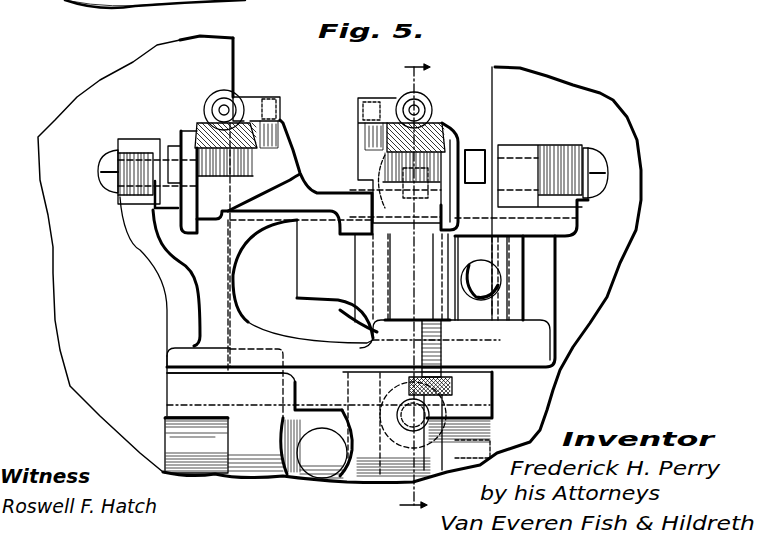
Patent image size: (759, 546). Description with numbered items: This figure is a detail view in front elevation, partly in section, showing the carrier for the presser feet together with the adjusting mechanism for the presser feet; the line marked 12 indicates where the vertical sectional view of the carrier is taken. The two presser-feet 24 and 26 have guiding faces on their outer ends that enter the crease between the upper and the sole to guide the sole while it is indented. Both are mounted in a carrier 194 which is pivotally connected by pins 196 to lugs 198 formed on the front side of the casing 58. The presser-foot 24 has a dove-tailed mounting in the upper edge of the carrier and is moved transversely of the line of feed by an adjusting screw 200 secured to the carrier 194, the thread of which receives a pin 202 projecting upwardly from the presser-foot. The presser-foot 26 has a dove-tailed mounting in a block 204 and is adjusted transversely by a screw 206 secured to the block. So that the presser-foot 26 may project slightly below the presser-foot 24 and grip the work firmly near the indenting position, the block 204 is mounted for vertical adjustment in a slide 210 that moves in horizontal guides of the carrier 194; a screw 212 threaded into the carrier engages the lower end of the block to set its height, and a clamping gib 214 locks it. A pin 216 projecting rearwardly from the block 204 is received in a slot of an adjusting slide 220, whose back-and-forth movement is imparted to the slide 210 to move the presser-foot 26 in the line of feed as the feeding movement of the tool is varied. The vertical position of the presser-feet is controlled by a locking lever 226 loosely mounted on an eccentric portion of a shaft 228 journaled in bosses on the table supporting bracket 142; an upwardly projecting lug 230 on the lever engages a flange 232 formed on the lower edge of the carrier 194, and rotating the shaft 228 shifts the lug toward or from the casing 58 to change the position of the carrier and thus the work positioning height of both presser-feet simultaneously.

The section line 12— 12 is at (409, 286).
The presser-foot 24 is at (208, 122).
The presser-foot 26 is at (438, 119).
The casing 58 is at (627, 130).
The bracket 142 is at (133, 3).
The carrier 194 is at (167, 298).
The pins 196 is at (102, 160).
The lugs 198 is at (160, 141).
The adjusting screw 200 is at (230, 90).
The pin 202 is at (285, 136).
The block 204 is at (433, 187).
The screw 206 is at (423, 97).
The slide 210 is at (307, 275).
The screw 212 is at (452, 387).
The clamping gib 214 is at (502, 253).
The pin 216 is at (376, 180).
The adjusting slide 220 is at (387, 282).
The locking lever 226 is at (263, 447).
The shaft 228 is at (333, 458).
The lug 230 is at (173, 391).
The flange 232 is at (165, 370).